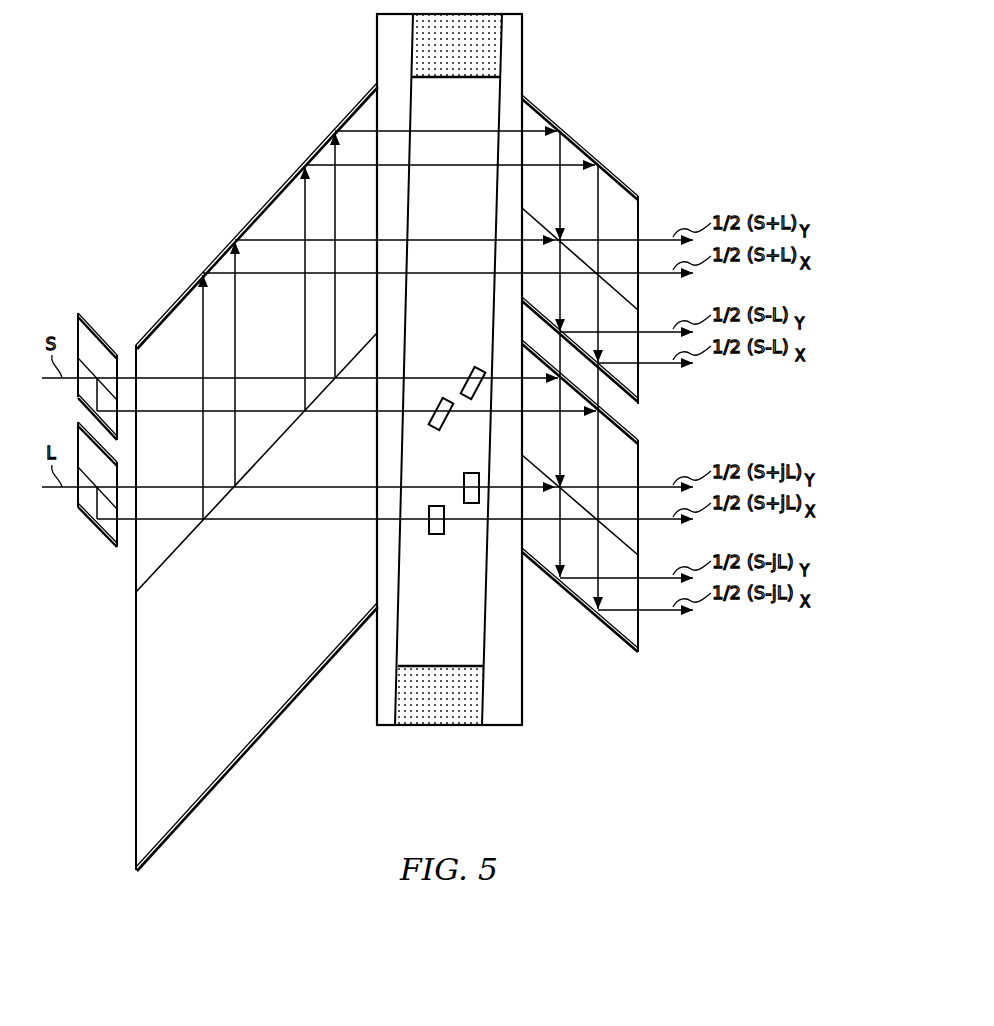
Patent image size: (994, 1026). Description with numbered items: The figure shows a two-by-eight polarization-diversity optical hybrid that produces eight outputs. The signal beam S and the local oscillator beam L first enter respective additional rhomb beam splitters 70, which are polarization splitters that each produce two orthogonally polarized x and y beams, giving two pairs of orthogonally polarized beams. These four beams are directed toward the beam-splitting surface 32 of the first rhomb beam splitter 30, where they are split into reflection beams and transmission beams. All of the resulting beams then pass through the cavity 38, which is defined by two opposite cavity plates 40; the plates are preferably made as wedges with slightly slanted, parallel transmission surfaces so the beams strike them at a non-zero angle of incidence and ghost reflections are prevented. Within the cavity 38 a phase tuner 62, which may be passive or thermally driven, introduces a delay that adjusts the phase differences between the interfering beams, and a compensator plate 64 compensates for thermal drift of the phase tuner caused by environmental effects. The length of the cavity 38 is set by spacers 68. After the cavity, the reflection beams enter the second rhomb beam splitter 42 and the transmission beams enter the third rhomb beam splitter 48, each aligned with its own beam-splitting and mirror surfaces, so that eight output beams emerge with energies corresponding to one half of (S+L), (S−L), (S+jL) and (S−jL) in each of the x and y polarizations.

The first rhomb beam splitter 30 is at (251, 208).
The beam-splitting surface 32 is at (281, 440).
The cavity 38 is at (445, 118).
The cavity plates 40 is at (378, 53).
The second rhomb beam splitter 42 is at (598, 144).
The third rhomb beam splitter 48 is at (582, 611).
The phase tuner 62 is at (479, 367).
The compensator plate 64 is at (470, 504).
The spacers 68 is at (445, 58).
The additional rhomb beam splitters 70 is at (97, 333).